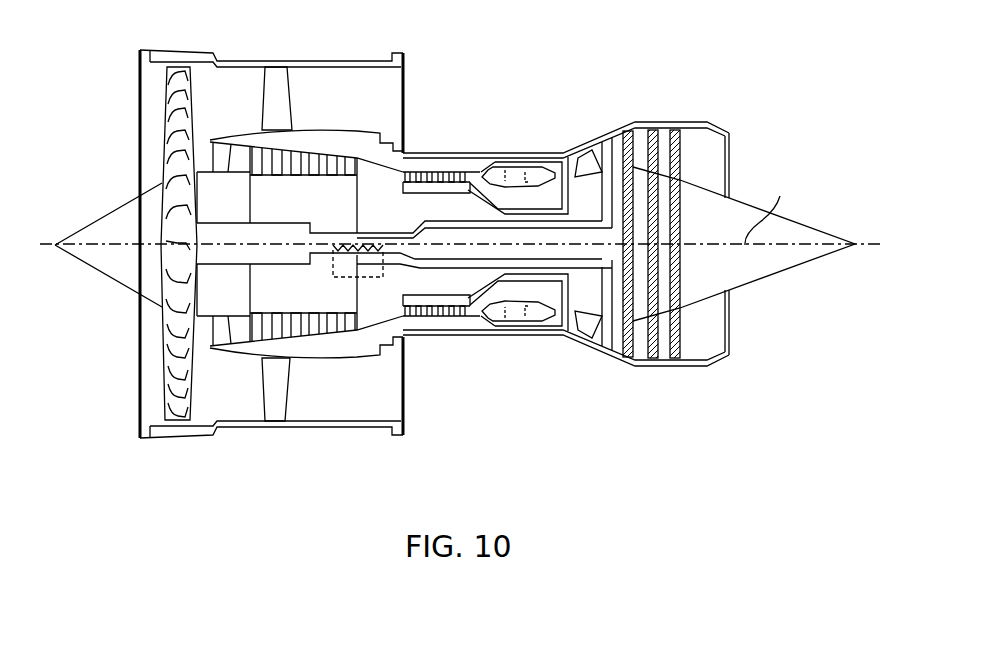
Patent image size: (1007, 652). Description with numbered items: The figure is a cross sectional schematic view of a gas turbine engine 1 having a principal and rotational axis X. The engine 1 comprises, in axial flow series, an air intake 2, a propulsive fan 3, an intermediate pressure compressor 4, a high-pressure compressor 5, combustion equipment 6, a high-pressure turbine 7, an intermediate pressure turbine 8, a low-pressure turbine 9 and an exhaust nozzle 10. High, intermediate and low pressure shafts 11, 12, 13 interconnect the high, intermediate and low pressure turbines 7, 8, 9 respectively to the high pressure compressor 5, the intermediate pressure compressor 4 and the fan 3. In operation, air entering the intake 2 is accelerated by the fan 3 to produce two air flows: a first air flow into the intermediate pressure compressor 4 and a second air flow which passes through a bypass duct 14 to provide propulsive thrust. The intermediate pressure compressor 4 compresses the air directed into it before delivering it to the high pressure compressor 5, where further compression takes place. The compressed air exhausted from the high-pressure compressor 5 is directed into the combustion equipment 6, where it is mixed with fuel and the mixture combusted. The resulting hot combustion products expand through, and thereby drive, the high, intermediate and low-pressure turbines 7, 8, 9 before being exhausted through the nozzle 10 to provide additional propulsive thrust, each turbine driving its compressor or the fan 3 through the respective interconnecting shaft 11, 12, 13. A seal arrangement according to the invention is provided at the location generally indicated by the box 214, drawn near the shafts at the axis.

The gas turbine engine 1 is at (438, 98).
The air intake 2 is at (133, 92).
The propulsive fan 3 is at (173, 378).
The intermediate pressure compressor 4 is at (307, 323).
The high-pressure compressor 5 is at (443, 300).
The combustion equipment 6 is at (530, 320).
The high-pressure turbine 7 is at (575, 342).
The intermediate pressure turbine 8 is at (605, 340).
The low-pressure turbine 9 is at (680, 347).
The exhaust nozzle 10 is at (735, 165).
The high pressure shaft 11 is at (532, 212).
The intermediate pressure shaft 12 is at (580, 220).
The low pressure shaft 13 is at (622, 225).
The bypass duct 14 is at (338, 90).
The box 214 is at (362, 242).